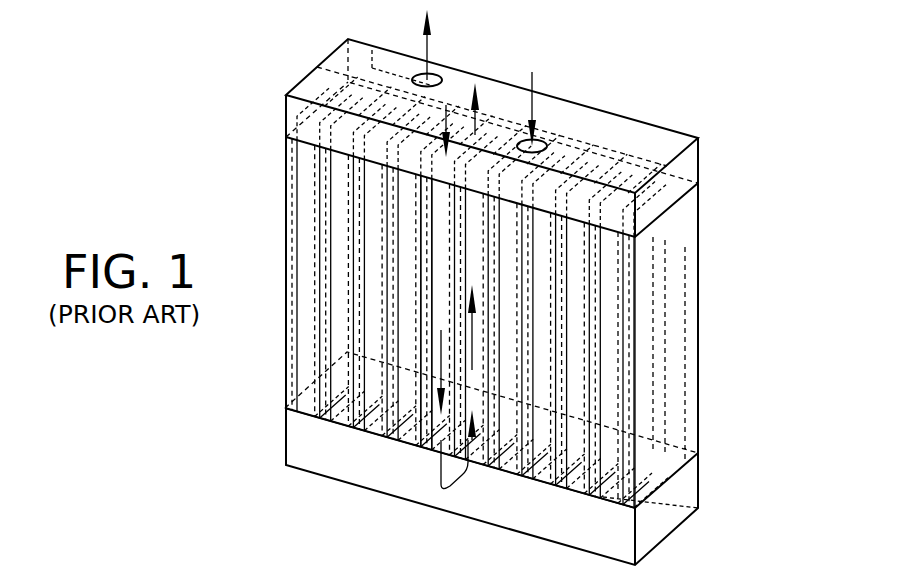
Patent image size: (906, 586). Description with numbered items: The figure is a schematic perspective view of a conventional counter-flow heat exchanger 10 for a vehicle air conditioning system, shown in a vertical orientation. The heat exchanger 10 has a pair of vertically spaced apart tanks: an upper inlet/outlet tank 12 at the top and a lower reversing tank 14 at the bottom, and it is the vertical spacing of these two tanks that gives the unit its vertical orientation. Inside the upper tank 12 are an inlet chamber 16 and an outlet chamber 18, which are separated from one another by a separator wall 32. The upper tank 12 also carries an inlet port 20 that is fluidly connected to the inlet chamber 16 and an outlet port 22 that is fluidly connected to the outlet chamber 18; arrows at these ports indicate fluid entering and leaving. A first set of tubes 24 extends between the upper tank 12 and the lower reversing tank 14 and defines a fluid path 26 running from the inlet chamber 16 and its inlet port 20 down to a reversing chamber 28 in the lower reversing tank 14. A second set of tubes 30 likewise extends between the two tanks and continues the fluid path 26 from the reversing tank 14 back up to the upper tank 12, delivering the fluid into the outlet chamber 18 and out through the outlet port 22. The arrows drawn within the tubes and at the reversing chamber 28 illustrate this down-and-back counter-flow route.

The heat exchanger 10 is at (522, 291).
The upper inlet/outlet tank 12 is at (478, 123).
The lower reversing tank 14 is at (298, 486).
The inlet chamber 16 is at (300, 92).
The outlet chamber 18 is at (648, 137).
The inlet port 20 is at (546, 138).
The outlet port 22 is at (415, 72).
The first set of tubes 24 is at (598, 493).
The fluid path 26 is at (425, 398).
The reversing chamber 28 is at (468, 480).
The second set of tubes 30 is at (682, 325).
The separator wall 32 is at (328, 68).